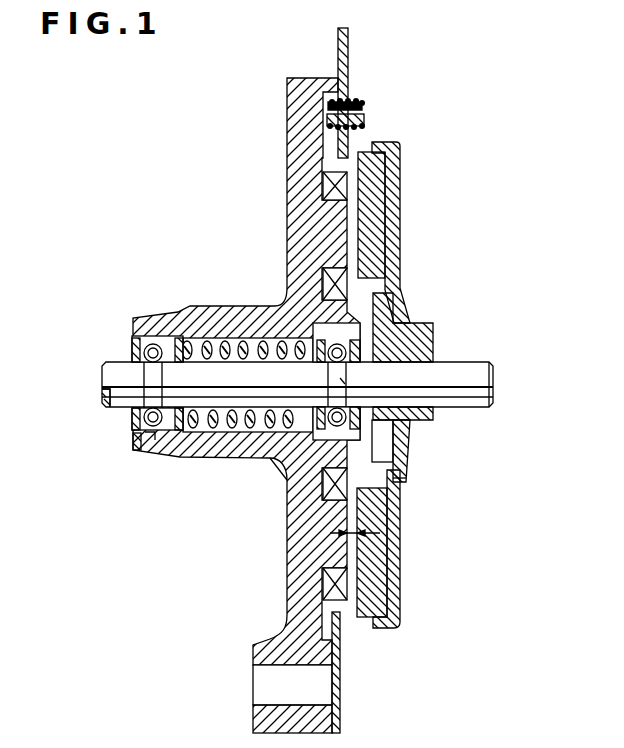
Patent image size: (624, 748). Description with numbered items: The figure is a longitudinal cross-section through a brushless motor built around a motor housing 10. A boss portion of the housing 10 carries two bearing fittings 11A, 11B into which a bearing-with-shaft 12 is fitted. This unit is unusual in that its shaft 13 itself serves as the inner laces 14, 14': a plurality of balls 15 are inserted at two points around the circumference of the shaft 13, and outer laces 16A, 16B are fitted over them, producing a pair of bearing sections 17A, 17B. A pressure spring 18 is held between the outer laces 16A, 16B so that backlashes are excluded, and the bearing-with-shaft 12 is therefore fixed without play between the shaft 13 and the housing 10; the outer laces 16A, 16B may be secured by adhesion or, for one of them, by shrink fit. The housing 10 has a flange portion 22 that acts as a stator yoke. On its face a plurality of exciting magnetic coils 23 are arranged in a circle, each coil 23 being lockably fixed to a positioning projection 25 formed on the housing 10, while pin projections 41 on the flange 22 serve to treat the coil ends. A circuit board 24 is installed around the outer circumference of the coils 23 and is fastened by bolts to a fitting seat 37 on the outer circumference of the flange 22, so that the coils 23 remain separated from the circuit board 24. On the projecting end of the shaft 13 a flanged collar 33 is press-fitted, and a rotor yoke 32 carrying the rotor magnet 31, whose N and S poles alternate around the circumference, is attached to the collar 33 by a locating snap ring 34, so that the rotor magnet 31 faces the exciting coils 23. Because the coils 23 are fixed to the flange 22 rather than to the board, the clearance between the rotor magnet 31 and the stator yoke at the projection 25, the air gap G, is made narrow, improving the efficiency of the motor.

The motor housing 10 is at (248, 581).
The bearing fitting 11A is at (132, 346).
The bearing fitting 11B is at (412, 343).
The bearing-with-shaft 12 is at (212, 392).
The shaft 13 is at (470, 382).
The inner lace 14 is at (97, 414).
The inner lace 14' is at (421, 407).
The balls 15 is at (156, 435).
The outer lace 16A is at (170, 338).
The outer lace 16B is at (305, 330).
The bearing section 17A is at (140, 445).
The bearing section 17B is at (290, 466).
The pressure spring 18 is at (247, 338).
The flange portion 22 is at (302, 150).
The exciting magnetic coil 23 is at (343, 190).
The circuit board 24 is at (345, 58).
The positioning projection 25 is at (372, 226).
The rotor magnet 31 is at (373, 602).
The rotor yoke 32 is at (395, 608).
The flanged collar 33 is at (415, 420).
The snap ring 34 is at (408, 300).
The fitting seat 37 is at (343, 716).
The pin projection 41 is at (365, 113).
The air gap G is at (368, 534).